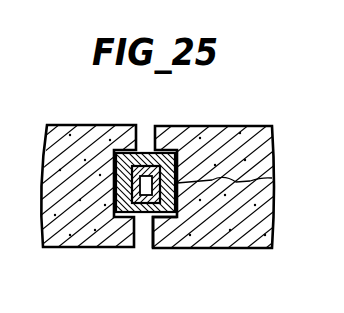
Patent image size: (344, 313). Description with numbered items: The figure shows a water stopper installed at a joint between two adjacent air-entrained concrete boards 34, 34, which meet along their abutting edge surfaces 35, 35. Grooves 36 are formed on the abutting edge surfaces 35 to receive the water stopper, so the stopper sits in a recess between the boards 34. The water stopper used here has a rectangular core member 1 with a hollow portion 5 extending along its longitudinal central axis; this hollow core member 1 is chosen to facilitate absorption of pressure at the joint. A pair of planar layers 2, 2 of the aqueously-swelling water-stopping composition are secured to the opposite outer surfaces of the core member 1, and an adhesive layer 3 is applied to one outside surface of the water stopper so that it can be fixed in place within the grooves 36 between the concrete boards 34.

The core member 1 is at (139, 152).
The planar layer of aqueously-swelling water-stopping composition 2 is at (151, 155).
The adhesive layer 3 is at (256, 180).
The hollow portion 5 is at (144, 196).
The air-entrained concrete board 34 is at (74, 237).
The abutting edge surface 35 is at (163, 235).
The groove 36 is at (115, 138).